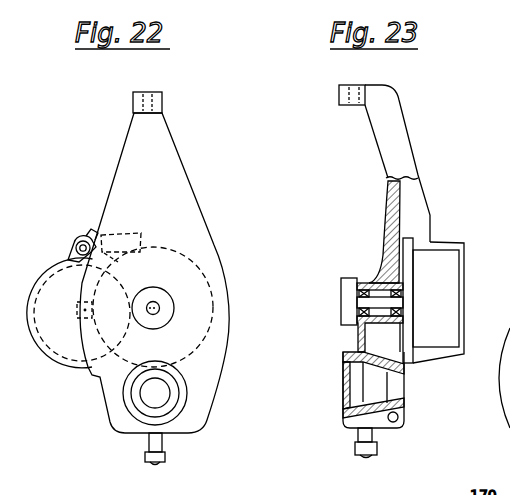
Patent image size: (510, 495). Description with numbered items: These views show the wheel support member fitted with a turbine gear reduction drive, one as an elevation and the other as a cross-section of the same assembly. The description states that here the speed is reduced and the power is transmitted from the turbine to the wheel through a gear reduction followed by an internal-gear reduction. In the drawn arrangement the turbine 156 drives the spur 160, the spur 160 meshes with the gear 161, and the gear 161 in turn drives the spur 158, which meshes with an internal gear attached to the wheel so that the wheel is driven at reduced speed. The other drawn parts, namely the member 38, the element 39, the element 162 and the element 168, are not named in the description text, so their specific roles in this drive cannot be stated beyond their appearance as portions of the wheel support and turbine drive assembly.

In FIG. 22, the supporting arm 38 is at (154, 278).
In FIG. 23, the supporting arm 38 is at (384, 184).
In FIG. 22, the pivot bearing 39 is at (155, 393).
In FIG. 22, the turbine 156 is at (78, 313).
In FIG. 23, the turbine 156 is at (438, 302).
In FIG. 22, the spur 158 is at (174, 307).
In FIG. 23, the spur 158 is at (348, 296).
In FIG. 22, the spur 160 is at (78, 318).
In FIG. 22, the gear 161 is at (196, 262).
In FIG. 23, the gear 161 is at (408, 252).
In FIG. 22, the screw 162 is at (75, 246).
In FIG. 22, the spring 168 is at (112, 252).